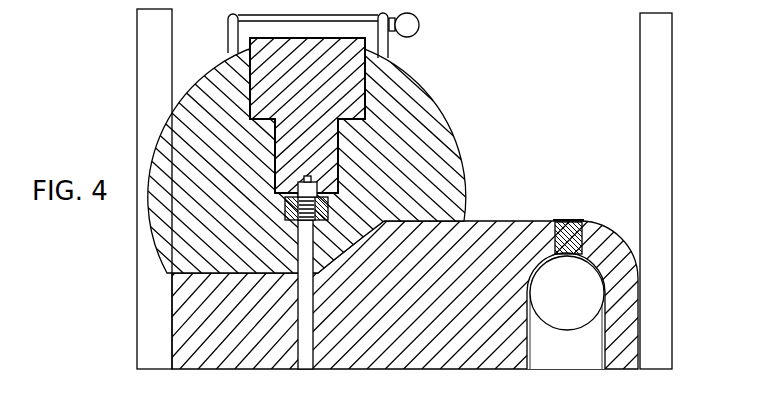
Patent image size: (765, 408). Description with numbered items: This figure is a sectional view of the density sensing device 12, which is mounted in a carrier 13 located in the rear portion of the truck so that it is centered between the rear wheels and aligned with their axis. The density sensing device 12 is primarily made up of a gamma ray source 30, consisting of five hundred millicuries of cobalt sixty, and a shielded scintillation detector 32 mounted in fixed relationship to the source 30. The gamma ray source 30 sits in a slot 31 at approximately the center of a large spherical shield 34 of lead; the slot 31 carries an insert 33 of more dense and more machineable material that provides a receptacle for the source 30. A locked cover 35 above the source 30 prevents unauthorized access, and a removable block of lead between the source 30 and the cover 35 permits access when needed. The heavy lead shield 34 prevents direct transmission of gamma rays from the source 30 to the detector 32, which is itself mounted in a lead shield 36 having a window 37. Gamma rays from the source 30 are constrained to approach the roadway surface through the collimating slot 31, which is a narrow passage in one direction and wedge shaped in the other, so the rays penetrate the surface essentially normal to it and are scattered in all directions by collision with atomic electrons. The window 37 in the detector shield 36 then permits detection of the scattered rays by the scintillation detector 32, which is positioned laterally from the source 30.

The density sensing device 12 is at (467, 163).
The carrier 13 is at (672, 126).
The gamma ray source 30 is at (313, 225).
The slot 31 is at (302, 251).
The scintillation detector 32 is at (577, 300).
The insert 33 is at (283, 205).
The spherical shield 34 is at (404, 143).
The locked cover 35 is at (386, 11).
The lead shield 36 is at (435, 273).
The window 37 is at (566, 348).